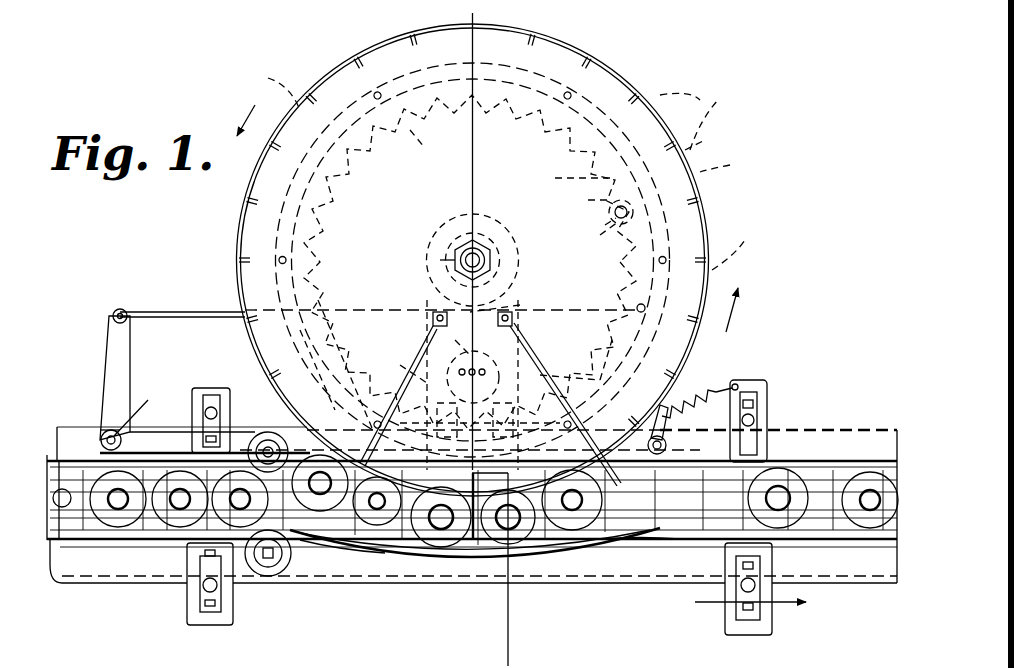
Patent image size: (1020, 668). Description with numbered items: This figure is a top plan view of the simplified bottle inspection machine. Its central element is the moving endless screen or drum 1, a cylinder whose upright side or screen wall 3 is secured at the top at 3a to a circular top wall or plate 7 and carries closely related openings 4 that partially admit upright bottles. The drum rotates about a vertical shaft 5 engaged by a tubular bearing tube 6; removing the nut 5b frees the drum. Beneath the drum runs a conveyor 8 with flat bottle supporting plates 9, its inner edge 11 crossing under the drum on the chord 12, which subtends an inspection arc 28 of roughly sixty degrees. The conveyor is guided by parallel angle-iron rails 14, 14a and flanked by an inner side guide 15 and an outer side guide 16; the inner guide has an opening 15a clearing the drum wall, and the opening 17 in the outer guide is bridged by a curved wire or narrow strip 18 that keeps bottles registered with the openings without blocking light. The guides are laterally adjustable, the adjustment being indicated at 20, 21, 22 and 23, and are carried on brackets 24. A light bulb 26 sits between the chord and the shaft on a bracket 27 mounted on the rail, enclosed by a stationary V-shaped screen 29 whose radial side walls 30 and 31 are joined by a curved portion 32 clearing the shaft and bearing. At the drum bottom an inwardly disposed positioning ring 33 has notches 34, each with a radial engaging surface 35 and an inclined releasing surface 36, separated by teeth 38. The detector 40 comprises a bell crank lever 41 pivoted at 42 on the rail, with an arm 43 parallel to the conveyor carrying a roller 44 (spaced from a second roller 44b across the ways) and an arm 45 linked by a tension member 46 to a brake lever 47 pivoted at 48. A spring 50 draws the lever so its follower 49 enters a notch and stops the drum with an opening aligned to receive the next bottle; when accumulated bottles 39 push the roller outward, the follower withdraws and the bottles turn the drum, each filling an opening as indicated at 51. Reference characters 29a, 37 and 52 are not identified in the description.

The endless screen or drum 1 is at (238, 250).
The upright side or screen wall 3 is at (468, 40).
The top securing point 3a is at (767, 657).
The openings 4 is at (708, 177).
The shaft 5 is at (489, 245).
The nut 5b is at (455, 258).
The tubular bearing tube 6 is at (500, 250).
The circular top wall or plate 7 is at (612, 92).
The conveyor 8 is at (145, 517).
The bottle supporting plates 9 is at (93, 465).
The inner edge of conveyor 11 is at (880, 412).
The chord 12 is at (470, 448).
The guiding and supporting rail 14 is at (838, 430).
The guiding and supporting rail 14a is at (648, 578).
The inner side guide 15 is at (48, 460).
The opening in inner guide 15a is at (660, 542).
The outer side guide 16 is at (50, 545).
The opening in outer guide 17 is at (506, 640).
The wire or narrow strip 18 is at (398, 542).
The adjustment 20 is at (213, 390).
The adjustment 21 is at (752, 392).
The adjustment 22 is at (205, 615).
The adjustment 23 is at (738, 635).
The brackets 24 is at (770, 430).
The light bulb 26 is at (518, 343).
The bracket 27 is at (522, 305).
The inspection arc 28 is at (490, 392).
The stationary screen 29 is at (570, 360).
The rotation direction 29' 29a is at (263, 99).
The radial side wall 30 is at (403, 361).
The radial side wall 31 is at (583, 361).
The curved portion 32 is at (451, 352).
The positioning ring 33 is at (355, 175).
The notches 34 is at (430, 144).
The engaging surface 35 is at (569, 177).
The releasing surface 36 is at (600, 168).
The cam link 37 is at (585, 207).
The teeth 38 is at (597, 227).
The bottles 39 is at (178, 520).
The detector 40 is at (215, 375).
The bell crank lever 41 is at (150, 430).
The pivot 42 is at (141, 408).
The arm 43 is at (205, 438).
The roller 44 is at (262, 432).
The roller 44b is at (290, 570).
The arm 45 is at (108, 336).
The tension member 46 is at (200, 312).
The brake lever 47 is at (748, 315).
The pivot 48 is at (668, 445).
The follower 49 is at (707, 135).
The spring 50 is at (698, 392).
The bottle in opening 51 is at (342, 555).
The chain pin 52 is at (447, 550).